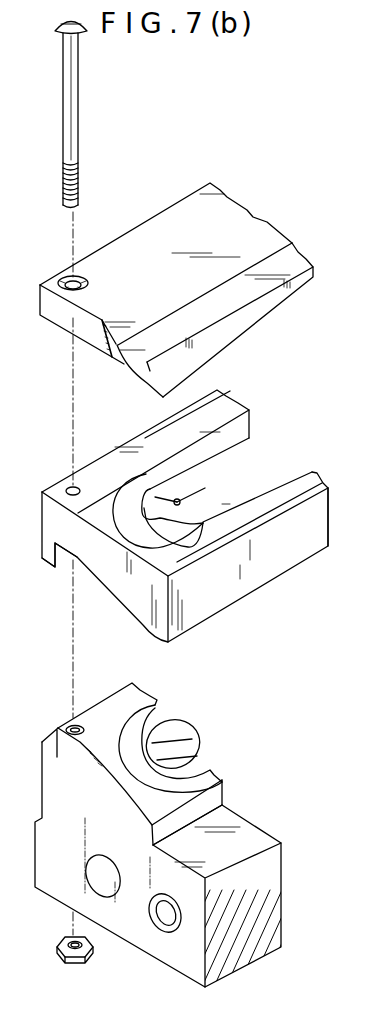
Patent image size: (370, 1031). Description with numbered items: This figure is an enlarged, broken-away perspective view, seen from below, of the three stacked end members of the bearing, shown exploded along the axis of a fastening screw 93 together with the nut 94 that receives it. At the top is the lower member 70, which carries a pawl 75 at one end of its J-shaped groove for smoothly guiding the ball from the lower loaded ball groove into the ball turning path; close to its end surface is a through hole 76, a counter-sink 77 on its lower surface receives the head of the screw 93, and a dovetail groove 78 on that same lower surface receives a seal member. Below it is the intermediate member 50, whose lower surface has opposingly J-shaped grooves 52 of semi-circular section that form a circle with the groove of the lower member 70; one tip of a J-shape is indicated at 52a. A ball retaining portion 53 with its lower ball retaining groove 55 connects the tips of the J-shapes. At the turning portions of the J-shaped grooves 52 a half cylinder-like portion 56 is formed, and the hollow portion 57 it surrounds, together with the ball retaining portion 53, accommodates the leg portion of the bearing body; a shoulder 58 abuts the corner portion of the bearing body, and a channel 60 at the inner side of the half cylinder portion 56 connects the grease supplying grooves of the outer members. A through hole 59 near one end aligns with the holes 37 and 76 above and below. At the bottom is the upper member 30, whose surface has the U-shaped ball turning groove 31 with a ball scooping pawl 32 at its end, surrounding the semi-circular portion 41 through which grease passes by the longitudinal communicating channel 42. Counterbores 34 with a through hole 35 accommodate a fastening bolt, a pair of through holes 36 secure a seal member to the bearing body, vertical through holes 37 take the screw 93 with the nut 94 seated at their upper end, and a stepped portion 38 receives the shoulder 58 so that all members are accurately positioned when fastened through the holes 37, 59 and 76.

The screw 93 is at (80, 30).
The lower member 70 is at (175, 290).
The pawl 75 is at (207, 355).
The through hole 76 is at (81, 278).
The counter-sink 77 is at (66, 277).
The dovetail groove 78 is at (122, 360).
The intermediate member 50 is at (199, 509).
The J-shaped grooves 52 is at (167, 462).
The wall edge 52a is at (195, 525).
The ball retaining portion 53 is at (312, 512).
The lower ball retaining groove 55 is at (293, 484).
The half cylinder-like portion 56 is at (173, 543).
The hollow portion 57 is at (257, 493).
The shoulder 58 is at (53, 567).
The through hole 59 is at (77, 488).
The channel 60 is at (177, 499).
The upper member 30 is at (166, 838).
The ball turning groove 31 is at (153, 720).
The ball scooping pawl 32 is at (226, 781).
The counterbores 34 is at (157, 915).
The through hole 35 is at (172, 929).
The through holes 36 is at (85, 872).
The vertical through holes 37 is at (72, 727).
The stepped portion 38 is at (50, 745).
The semi-circular portion 41 is at (172, 728).
The longitudinal communicating channel 42 is at (170, 752).
The nut 94 is at (58, 953).